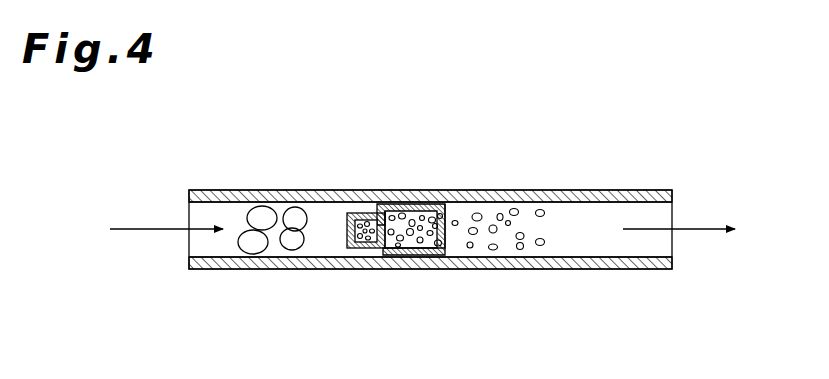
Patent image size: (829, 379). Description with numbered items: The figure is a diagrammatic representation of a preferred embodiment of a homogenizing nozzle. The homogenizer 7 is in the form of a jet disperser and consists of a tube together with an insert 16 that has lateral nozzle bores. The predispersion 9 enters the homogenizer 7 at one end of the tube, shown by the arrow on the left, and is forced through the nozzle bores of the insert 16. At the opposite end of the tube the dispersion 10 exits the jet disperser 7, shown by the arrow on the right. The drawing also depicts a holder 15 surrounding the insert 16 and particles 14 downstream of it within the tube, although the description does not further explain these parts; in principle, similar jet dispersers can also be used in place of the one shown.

The homogenizer 7 is at (345, 186).
The predispersion 9 is at (153, 233).
The dispersion 10 is at (698, 234).
The granules / particles 14 is at (503, 263).
The holder with granules 15 is at (403, 195).
The insert 16 is at (363, 249).